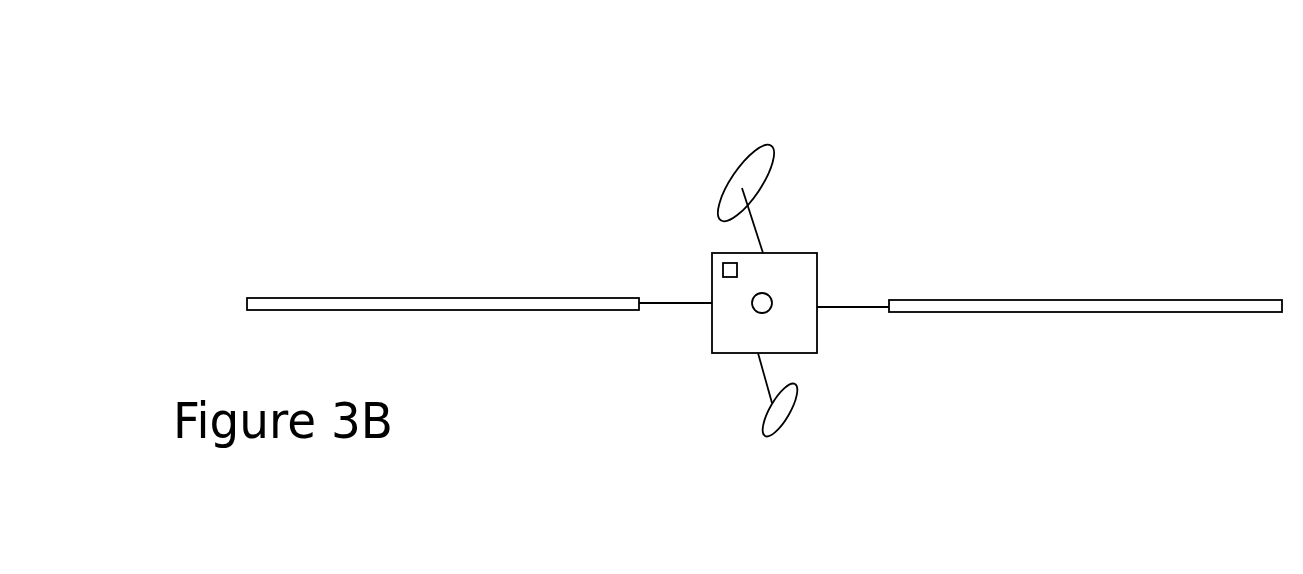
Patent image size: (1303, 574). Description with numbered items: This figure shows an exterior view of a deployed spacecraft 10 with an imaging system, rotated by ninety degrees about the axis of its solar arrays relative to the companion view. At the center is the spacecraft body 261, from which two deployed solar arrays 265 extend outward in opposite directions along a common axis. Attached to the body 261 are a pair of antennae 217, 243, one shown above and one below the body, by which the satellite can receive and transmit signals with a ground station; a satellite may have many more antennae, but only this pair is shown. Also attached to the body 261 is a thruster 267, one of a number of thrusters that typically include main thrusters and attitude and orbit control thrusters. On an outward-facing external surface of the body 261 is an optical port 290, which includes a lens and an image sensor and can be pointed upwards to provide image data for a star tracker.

The spacecraft 10 is at (392, 202).
The solar arrays 265 is at (467, 298).
The spacecraft body 261 is at (813, 348).
The optical port 290 is at (722, 268).
The thruster 267 is at (758, 313).
The antenna 217 is at (772, 157).
The antenna 243 is at (788, 412).